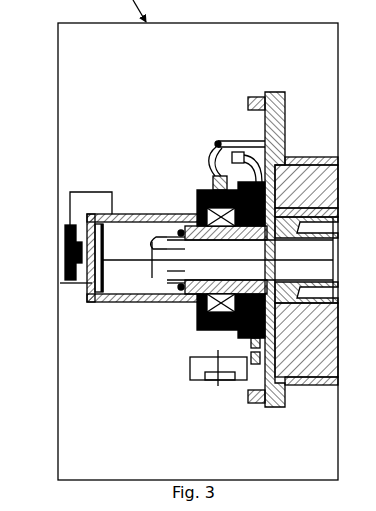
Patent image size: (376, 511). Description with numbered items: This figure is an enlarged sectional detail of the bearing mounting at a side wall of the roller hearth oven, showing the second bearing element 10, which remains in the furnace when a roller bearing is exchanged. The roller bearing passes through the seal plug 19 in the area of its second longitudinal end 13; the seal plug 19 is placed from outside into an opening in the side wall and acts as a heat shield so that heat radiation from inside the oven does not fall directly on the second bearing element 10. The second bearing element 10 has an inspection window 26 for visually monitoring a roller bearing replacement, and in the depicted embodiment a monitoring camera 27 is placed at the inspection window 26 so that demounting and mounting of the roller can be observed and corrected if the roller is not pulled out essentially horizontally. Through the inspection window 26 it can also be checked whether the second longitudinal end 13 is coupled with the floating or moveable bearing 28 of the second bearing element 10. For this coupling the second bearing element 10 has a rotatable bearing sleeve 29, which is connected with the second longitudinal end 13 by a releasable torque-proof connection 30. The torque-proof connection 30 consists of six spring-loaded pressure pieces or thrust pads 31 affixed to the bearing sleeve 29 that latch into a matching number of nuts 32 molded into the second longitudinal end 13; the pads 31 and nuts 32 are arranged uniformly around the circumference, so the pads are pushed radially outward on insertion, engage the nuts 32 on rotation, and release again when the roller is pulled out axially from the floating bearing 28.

The second bearing element 10 is at (188, 100).
The second longitudinal end 13 is at (166, 268).
The seal plug 19 is at (312, 184).
The inspection window 26 is at (60, 283).
The monitoring camera 27 is at (65, 253).
The floating or moveable bearing 28 is at (180, 232).
The bearing sleeve 29 is at (190, 296).
The torque-proof connection 30 is at (163, 125).
The spring-loaded pressure pieces or thrust pads 31 is at (183, 237).
The nuts 32 is at (151, 246).